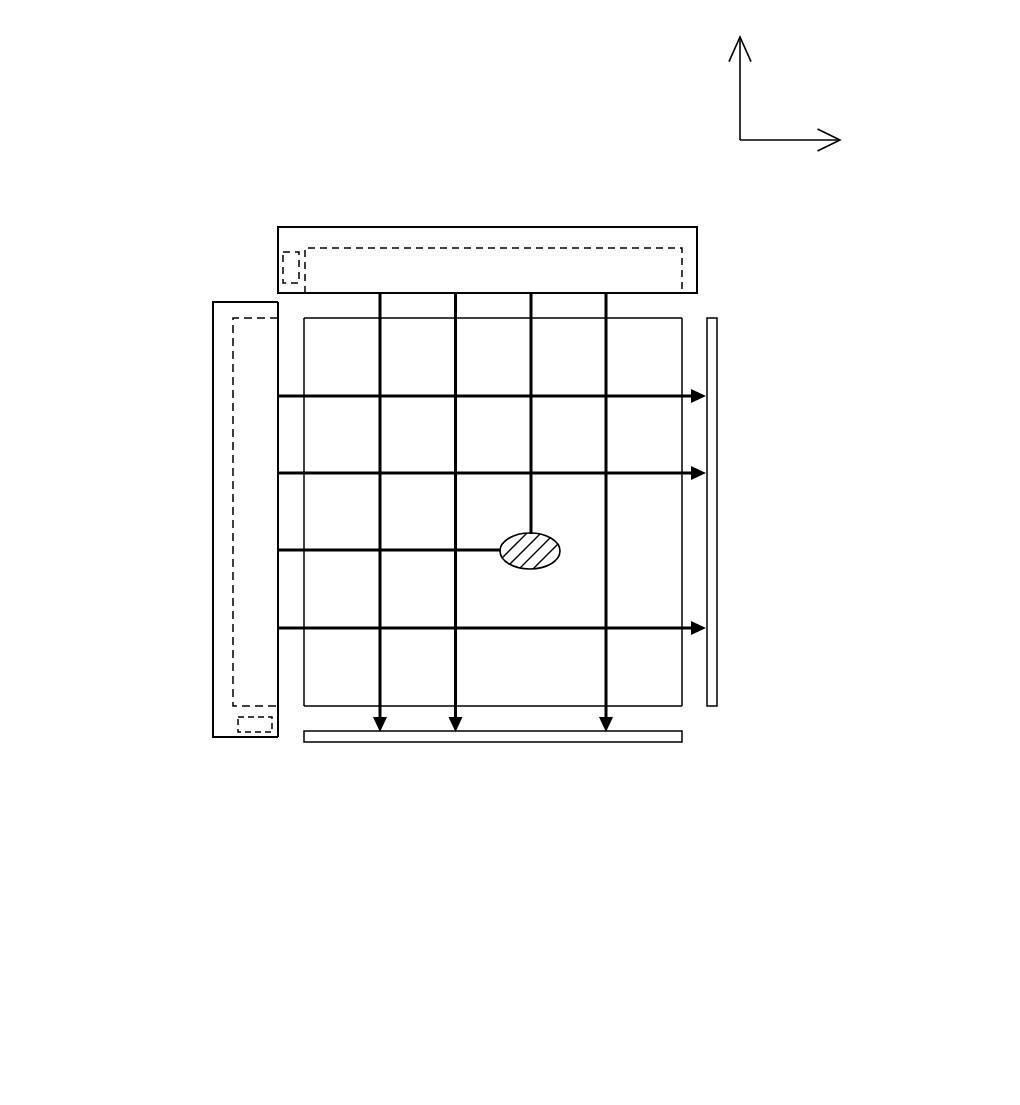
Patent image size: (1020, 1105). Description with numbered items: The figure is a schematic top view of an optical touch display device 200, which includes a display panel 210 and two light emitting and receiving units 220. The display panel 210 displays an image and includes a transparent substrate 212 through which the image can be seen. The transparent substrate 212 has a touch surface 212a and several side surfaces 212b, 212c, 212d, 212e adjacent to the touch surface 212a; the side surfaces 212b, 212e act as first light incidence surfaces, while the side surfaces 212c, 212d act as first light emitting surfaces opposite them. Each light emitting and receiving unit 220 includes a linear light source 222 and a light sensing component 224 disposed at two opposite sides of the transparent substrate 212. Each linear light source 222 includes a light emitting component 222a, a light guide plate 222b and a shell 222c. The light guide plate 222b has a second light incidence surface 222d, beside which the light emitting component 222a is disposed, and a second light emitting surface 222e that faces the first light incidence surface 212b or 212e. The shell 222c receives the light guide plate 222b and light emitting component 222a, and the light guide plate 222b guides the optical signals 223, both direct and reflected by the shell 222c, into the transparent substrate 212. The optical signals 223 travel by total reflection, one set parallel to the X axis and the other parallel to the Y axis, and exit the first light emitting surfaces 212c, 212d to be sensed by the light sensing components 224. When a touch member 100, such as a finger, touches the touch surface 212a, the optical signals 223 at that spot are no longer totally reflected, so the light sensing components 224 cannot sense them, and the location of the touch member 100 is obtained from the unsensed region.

The touch member 100 is at (552, 537).
The optical touch display device 200 is at (803, 878).
The display panel 210 is at (480, 475).
The transparent substrate 212 is at (675, 325).
The touch surface 212a is at (662, 360).
The side surface (first light incidence surface) 212b is at (305, 591).
The side surface (first light emitting surface) 212c is at (537, 707).
The side surface (first light emitting surface) 212d is at (683, 588).
The side surface (first light incidence surface) 212e is at (568, 317).
The light emitting and receiving unit 220 is at (454, 522).
The linear light source 222 is at (118, 628).
The light emitting component 222a is at (238, 725).
The light guide plate 222b is at (233, 688).
The shell 222c is at (213, 645).
The second light incidence surface 222d is at (257, 705).
The second light emitting surface 222e is at (278, 500).
The optical signals 223 is at (302, 395).
The light sensing component 224 is at (717, 542).